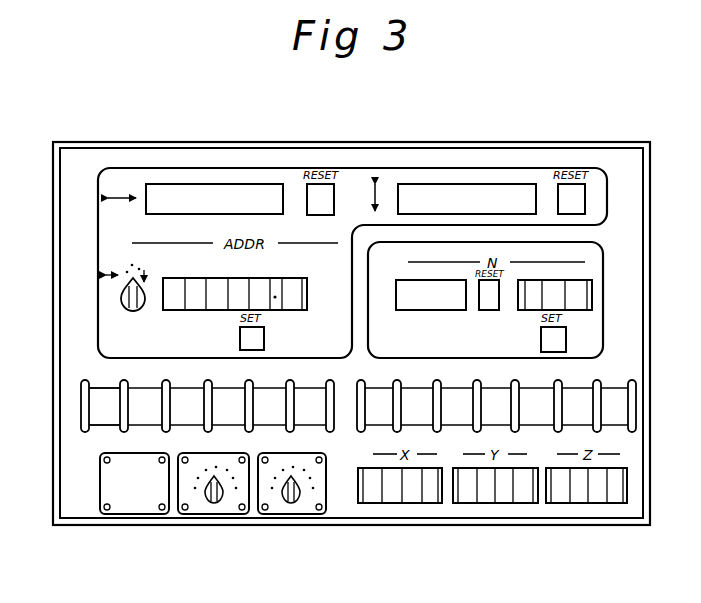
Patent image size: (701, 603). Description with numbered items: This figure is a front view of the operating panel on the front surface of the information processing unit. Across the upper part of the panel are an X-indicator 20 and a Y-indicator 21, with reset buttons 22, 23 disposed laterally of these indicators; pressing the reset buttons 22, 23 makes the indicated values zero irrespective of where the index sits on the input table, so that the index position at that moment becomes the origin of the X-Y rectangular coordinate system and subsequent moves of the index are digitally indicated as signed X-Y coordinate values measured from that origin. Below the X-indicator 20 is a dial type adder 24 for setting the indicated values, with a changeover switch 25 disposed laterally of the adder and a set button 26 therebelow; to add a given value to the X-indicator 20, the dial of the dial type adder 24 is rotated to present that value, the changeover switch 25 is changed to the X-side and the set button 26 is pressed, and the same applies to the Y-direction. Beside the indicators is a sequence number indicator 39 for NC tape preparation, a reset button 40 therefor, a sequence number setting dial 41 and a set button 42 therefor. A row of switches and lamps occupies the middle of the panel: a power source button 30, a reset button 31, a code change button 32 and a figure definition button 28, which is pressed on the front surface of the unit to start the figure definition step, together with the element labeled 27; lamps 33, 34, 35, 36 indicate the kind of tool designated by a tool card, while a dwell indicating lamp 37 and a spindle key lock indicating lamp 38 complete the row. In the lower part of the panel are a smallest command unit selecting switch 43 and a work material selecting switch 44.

The X-indicator 20 is at (188, 182).
The Y-indicator 21 is at (456, 182).
The reset button 22 is at (305, 194).
The reset button 23 is at (586, 197).
The dial type adder 24 is at (286, 277).
The changeover switch 25 is at (120, 298).
The set button 26 is at (264, 338).
The toggle switch 27 is at (185, 389).
The figure definition button 28 is at (231, 389).
The power source button 30 is at (103, 388).
The reset button 31 is at (143, 388).
The code change button 32 is at (268, 389).
The lamp 33 is at (378, 388).
The lamp 34 is at (416, 388).
The lamp 35 is at (457, 388).
The lamp 36 is at (494, 388).
The dwell indicating lamp 37 is at (534, 388).
The spindle key lock indicating lamp 38 is at (577, 388).
The sequence number indicator 39 is at (409, 278).
The reset button 40 is at (485, 311).
The sequence number setting dial 41 is at (585, 277).
The set button 42 is at (566, 337).
The smallest command unit selecting switch 43 is at (206, 514).
The work material selecting switch 44 is at (292, 514).